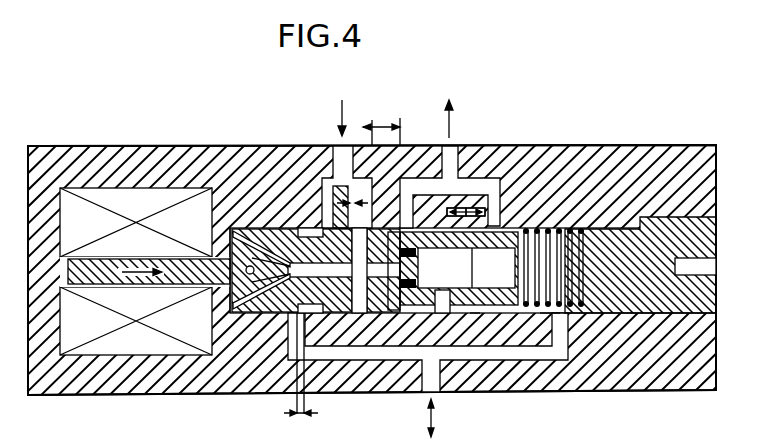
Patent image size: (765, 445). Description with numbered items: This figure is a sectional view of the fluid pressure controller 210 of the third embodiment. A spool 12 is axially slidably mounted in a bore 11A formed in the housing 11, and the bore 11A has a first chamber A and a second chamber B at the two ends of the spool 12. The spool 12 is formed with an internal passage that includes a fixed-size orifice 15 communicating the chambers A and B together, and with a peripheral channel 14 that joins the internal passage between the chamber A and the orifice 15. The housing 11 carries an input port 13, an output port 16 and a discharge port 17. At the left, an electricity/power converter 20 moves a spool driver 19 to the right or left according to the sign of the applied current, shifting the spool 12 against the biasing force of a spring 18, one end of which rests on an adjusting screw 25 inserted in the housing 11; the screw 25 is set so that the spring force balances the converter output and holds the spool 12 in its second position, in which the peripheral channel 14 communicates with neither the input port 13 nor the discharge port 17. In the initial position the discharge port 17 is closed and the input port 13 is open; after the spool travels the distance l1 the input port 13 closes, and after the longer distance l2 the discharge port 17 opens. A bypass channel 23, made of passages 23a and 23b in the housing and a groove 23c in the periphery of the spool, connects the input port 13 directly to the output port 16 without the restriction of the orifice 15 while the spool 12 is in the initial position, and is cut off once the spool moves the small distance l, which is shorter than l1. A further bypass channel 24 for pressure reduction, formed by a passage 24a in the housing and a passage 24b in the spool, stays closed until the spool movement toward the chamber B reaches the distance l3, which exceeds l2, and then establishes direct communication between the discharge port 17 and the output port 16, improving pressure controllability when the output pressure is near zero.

The housing 11 is at (608, 146).
The bore 11A is at (602, 315).
The spool 12 is at (514, 313).
The input port 13 is at (363, 195).
The peripheral channel 14 is at (364, 315).
The fixed-size orifice 15 is at (403, 313).
The output port 16 is at (436, 362).
The discharge port 17 is at (447, 172).
The spring 18 is at (583, 315).
The spool driver 19 is at (100, 262).
The electricity/power converter 20 is at (146, 340).
The fluid pressure controller 210 is at (698, 143).
The bypass channel 23 is at (285, 86).
The passage 23a is at (322, 230).
The passage 23b is at (248, 236).
The groove 23c is at (308, 228).
The bypass channel for pressure reduction 24 is at (553, 82).
The passage 24a is at (520, 176).
The passage 24b is at (470, 178).
The adjusting screw 25 is at (687, 290).
The first chamber A is at (245, 318).
The second chamber B is at (549, 313).
The distance l is at (301, 377).
The distance l1 is at (331, 185).
The distance l2 is at (389, 118).
The distance l3 is at (477, 315).